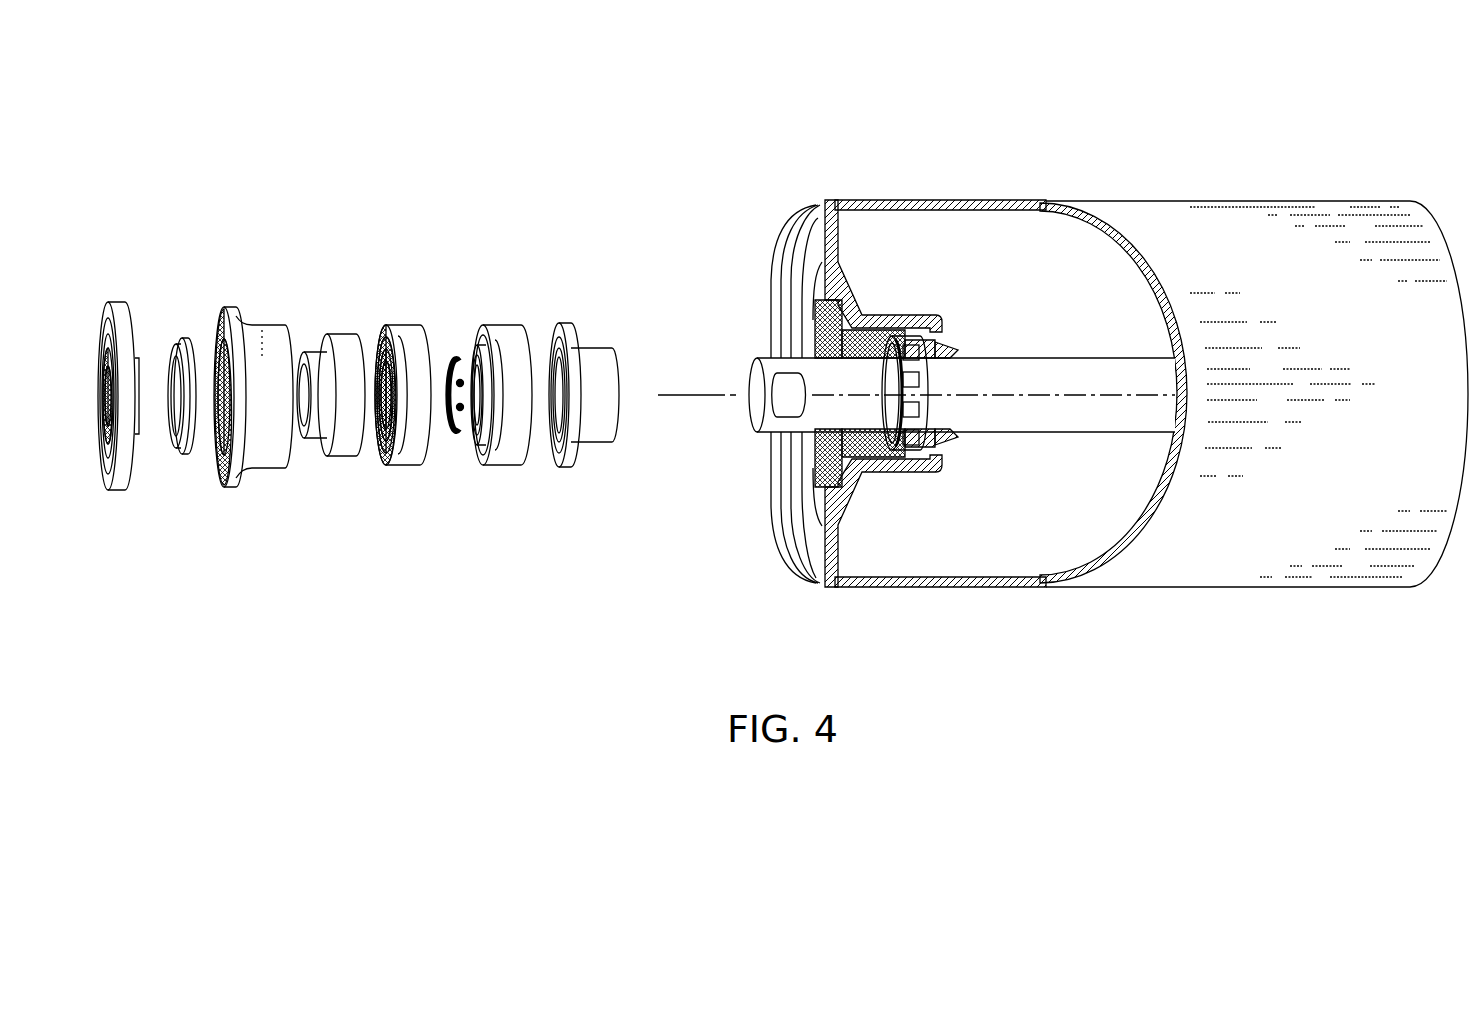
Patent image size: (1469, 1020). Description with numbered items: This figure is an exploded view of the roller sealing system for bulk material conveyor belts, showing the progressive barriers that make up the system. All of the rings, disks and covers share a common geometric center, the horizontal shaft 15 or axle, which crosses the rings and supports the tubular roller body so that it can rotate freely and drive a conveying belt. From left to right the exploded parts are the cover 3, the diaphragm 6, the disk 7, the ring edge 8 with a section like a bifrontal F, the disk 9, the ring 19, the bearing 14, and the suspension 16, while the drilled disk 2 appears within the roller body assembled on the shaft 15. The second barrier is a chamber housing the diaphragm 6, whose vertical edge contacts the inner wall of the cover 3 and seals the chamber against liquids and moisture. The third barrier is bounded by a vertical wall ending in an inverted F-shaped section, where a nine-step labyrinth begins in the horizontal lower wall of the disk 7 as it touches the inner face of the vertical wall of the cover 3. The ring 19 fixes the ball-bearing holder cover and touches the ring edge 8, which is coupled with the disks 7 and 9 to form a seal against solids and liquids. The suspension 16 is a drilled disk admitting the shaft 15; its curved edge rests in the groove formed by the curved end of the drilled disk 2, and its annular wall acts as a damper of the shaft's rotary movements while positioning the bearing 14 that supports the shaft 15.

The drilled disk 2 is at (826, 246).
The cover 3 is at (121, 488).
The diaphragm 6 is at (182, 320).
The disk 7 is at (262, 463).
The ring edge 8 is at (340, 320).
The disk 9 is at (417, 466).
The bearing 14 is at (503, 316).
The shaft 15 is at (1010, 415).
The suspension 16 is at (605, 460).
The ring 19 is at (447, 322).